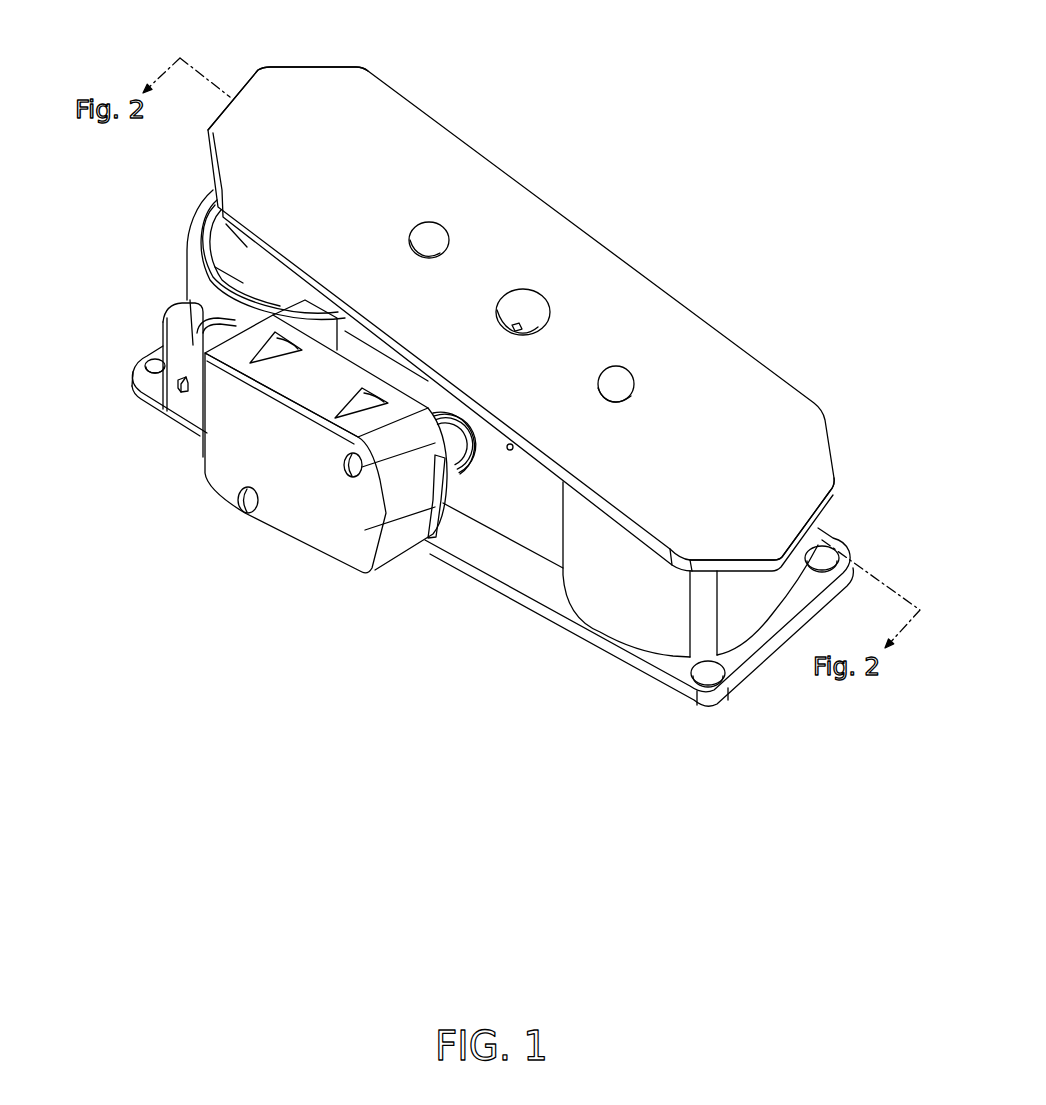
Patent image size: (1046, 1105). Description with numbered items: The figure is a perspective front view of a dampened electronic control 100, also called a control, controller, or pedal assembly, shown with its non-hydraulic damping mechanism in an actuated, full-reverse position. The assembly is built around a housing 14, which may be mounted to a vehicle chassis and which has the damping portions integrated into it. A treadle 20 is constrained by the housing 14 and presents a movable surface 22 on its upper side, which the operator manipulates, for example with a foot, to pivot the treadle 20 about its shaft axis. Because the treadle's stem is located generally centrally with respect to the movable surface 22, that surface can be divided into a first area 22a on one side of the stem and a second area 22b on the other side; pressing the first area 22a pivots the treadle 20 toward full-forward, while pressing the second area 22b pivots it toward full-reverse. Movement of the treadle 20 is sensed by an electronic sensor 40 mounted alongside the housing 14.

The dampened electronic control 100 is at (521, 357).
The treadle 20 is at (559, 289).
The movable surface 22 is at (527, 257).
The first area 22a is at (297, 84).
The second area 22b is at (803, 497).
The housing 14 is at (607, 617).
The electronic sensor 40 is at (240, 538).